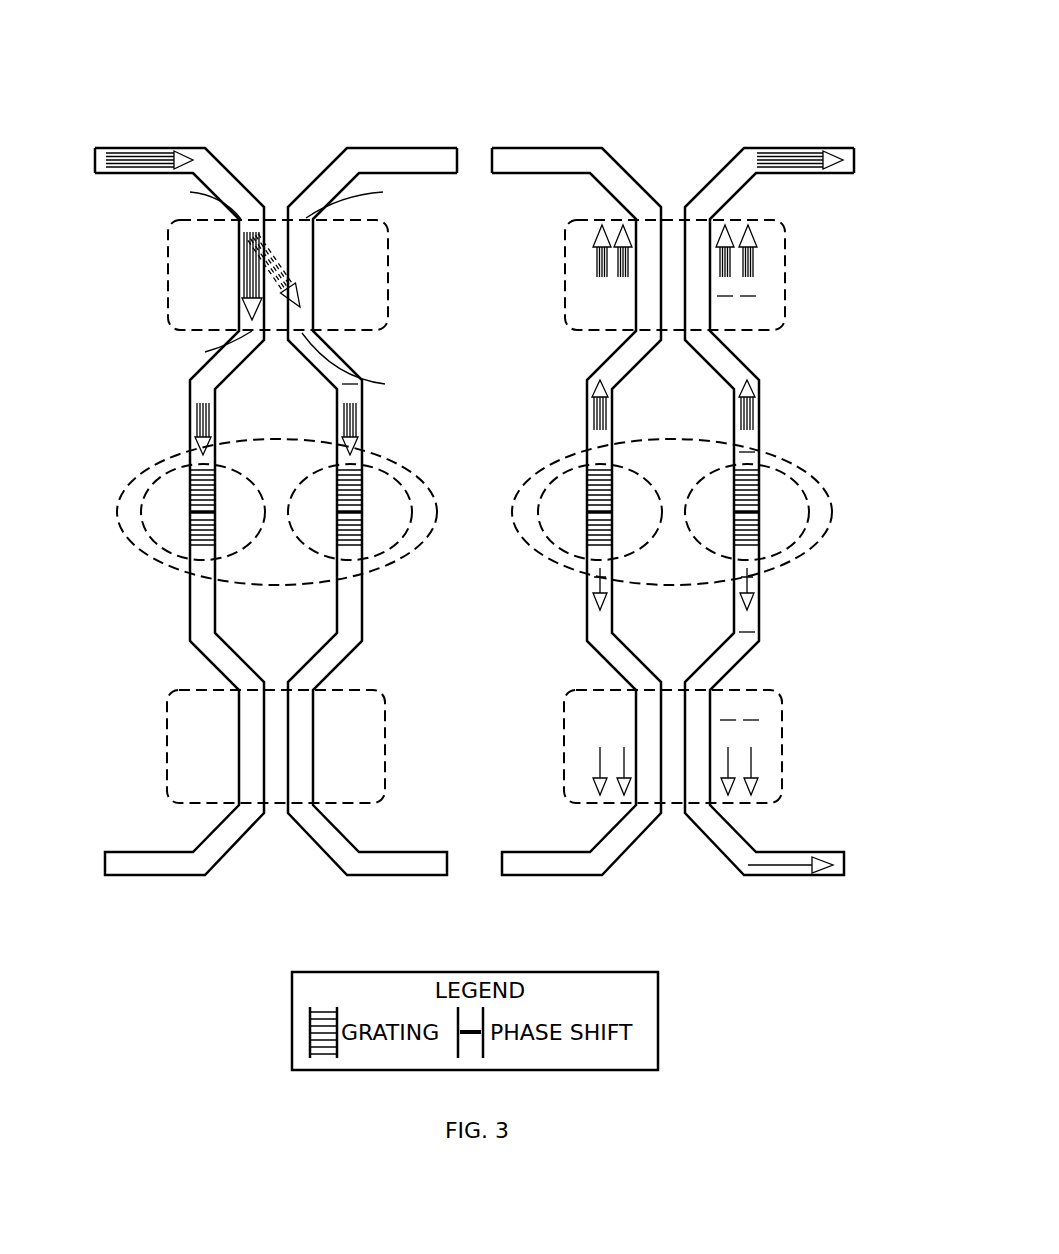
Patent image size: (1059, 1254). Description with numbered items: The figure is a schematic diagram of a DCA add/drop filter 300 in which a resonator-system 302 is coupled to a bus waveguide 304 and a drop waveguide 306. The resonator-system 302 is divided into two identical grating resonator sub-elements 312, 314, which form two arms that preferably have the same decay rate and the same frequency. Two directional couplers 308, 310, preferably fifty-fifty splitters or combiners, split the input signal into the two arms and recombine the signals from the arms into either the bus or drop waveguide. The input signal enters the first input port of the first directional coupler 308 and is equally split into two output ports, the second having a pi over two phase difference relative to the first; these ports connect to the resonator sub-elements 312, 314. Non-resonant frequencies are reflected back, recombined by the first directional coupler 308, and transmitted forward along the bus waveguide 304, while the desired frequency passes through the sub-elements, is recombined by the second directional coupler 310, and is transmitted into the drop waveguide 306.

The DCA add/drop filter 300 is at (297, 38).
The resonator-system 302 is at (528, 545).
The bus waveguide 304 is at (332, 172).
The drop waveguide 306 is at (329, 857).
The first directional coupler 308 is at (565, 286).
The second directional coupler 310 is at (565, 740).
The grating resonator sub-element 312 is at (237, 472).
The grating resonator sub-element 314 is at (311, 547).